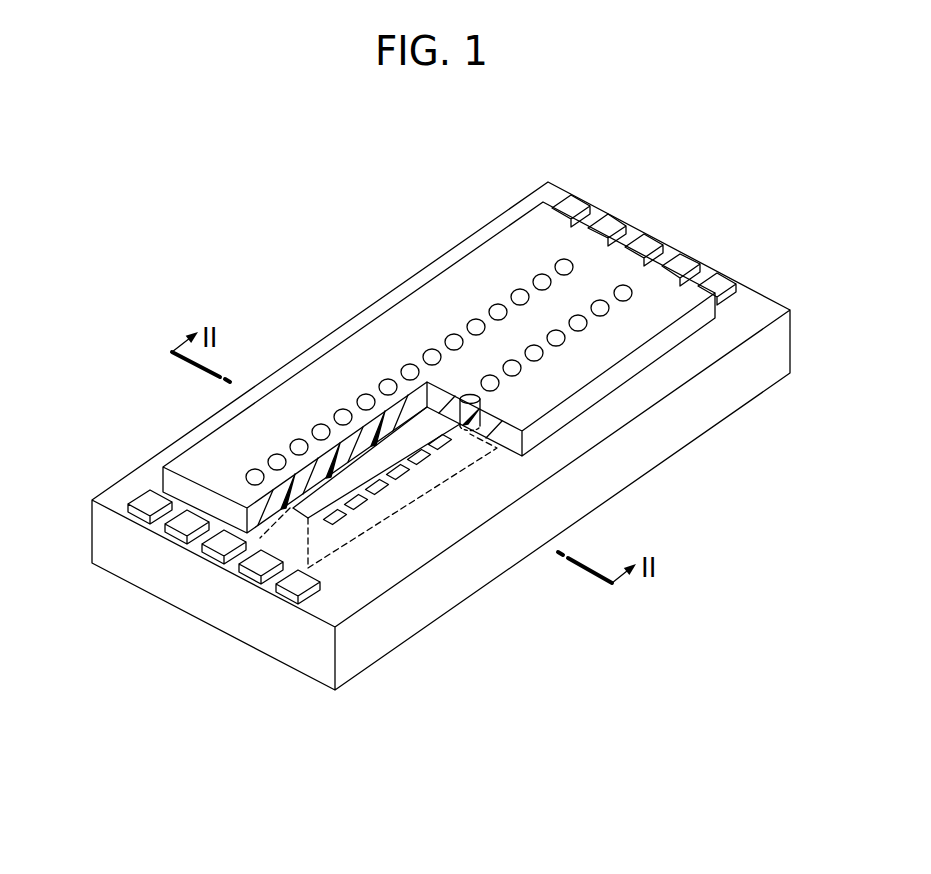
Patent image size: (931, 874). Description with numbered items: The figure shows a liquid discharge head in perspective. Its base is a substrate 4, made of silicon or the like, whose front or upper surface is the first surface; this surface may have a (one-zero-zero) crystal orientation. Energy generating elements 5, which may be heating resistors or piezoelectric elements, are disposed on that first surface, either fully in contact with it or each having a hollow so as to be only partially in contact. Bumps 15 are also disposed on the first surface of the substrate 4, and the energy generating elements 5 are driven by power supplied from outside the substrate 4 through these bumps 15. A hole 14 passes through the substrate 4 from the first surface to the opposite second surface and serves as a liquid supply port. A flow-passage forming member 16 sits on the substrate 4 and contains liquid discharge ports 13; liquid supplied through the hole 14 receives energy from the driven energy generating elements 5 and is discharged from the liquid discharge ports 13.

The substrate 4 is at (677, 433).
The energy generating elements 5 is at (357, 502).
The liquid discharge ports 13 is at (490, 383).
The hole 14 is at (407, 440).
The bumps 15 is at (293, 583).
The flow-passage forming member 16 is at (503, 255).